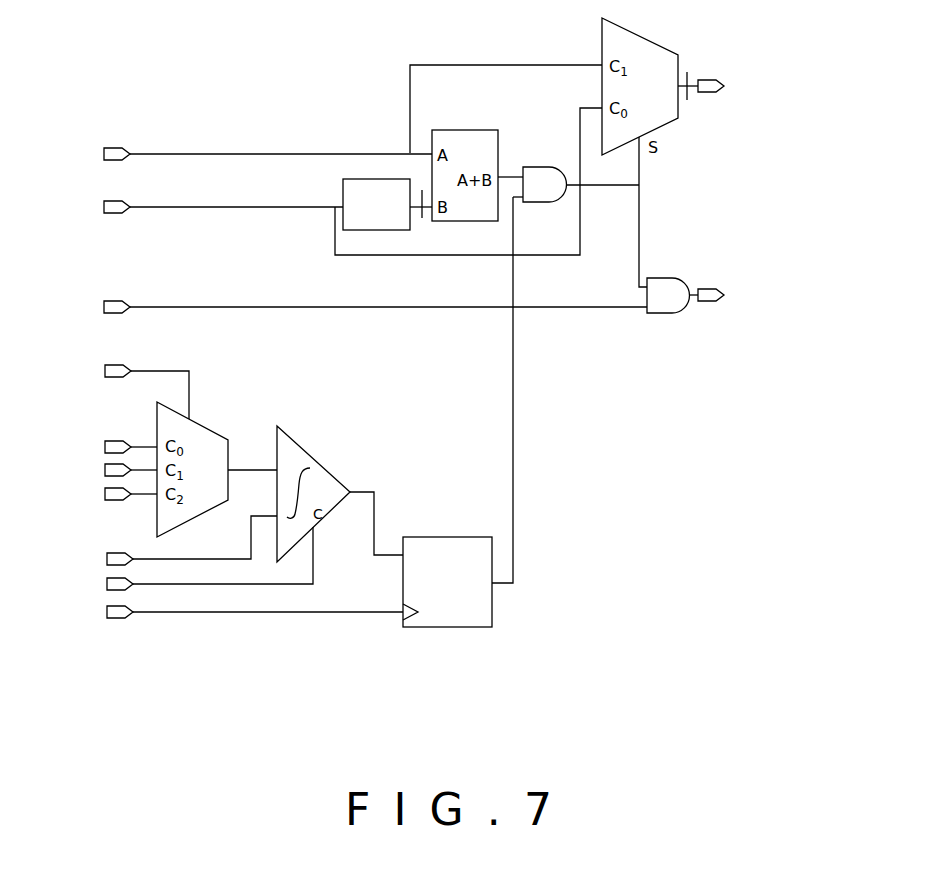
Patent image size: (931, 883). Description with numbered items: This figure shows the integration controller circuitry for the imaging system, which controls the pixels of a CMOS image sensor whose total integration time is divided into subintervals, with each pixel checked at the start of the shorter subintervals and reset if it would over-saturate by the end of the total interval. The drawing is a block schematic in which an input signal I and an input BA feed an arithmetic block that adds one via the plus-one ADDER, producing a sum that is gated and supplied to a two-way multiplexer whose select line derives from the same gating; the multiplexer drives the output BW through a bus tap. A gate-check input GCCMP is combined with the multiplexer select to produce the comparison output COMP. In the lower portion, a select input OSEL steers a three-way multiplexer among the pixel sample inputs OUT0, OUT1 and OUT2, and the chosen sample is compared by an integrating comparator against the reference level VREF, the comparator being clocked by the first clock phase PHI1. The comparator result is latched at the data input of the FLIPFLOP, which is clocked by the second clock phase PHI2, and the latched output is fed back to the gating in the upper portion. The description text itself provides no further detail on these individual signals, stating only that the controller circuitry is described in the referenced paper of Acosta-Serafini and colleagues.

The input I is at (259, 154).
The input BA is at (208, 207).
The input GCCMP is at (344, 307).
The output select input OSEL is at (121, 391).
The output 0 input OUT0 is at (107, 448).
The output 1 input OUT1 is at (107, 471).
The output 2 input OUT2 is at (107, 495).
The reference voltage input VREF is at (165, 542).
The clock phase 1 PHI1 is at (184, 562).
The clock phase 2 PHI2 is at (229, 614).
The output BW is at (717, 86).
The comparator output COMP is at (713, 295).
The +1 adder ADDER is at (387, 204).
The flip flop FLIPFLOP is at (443, 627).